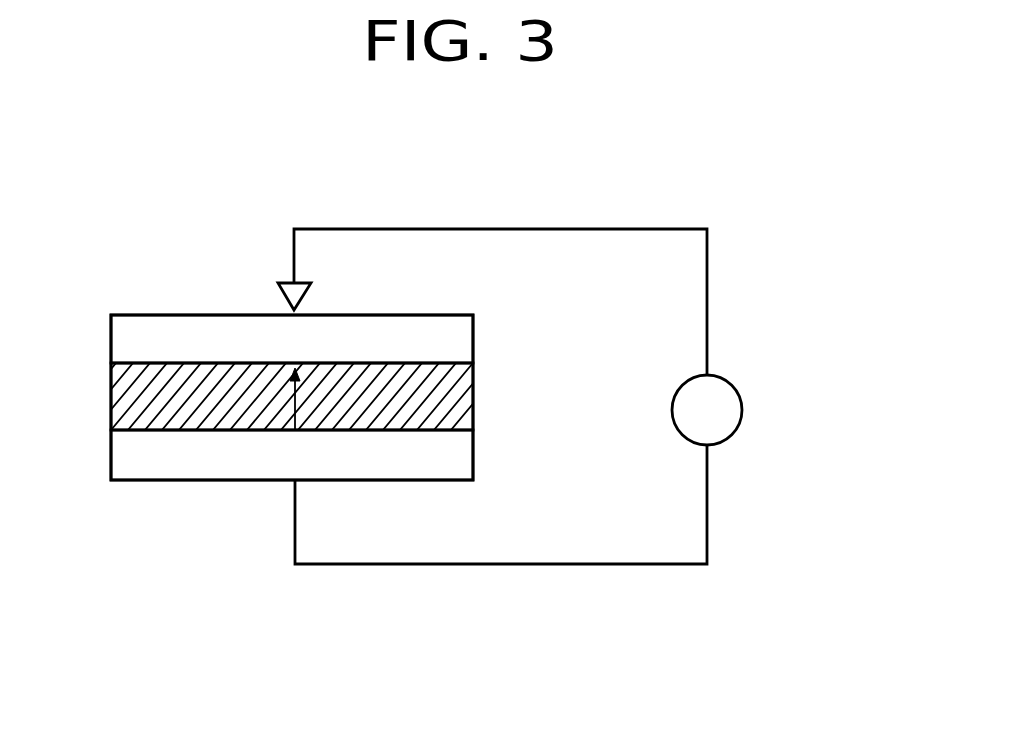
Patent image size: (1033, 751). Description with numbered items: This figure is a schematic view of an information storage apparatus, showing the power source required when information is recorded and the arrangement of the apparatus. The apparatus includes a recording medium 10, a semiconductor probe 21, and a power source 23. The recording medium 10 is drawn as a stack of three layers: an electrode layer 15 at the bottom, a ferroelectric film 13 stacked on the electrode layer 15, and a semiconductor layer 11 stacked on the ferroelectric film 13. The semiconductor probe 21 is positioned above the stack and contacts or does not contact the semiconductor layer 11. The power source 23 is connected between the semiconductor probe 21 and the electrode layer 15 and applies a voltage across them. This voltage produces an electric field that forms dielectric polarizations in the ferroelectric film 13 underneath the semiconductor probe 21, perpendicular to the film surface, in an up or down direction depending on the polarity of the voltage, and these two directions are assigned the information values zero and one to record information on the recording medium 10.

The recording medium 10 is at (167, 505).
The semiconductor layer 11 is at (111, 341).
The ferroelectric film 13 is at (111, 405).
The electrode layer 15 is at (111, 460).
The semiconductor probe 21 is at (284, 283).
The power source 23 is at (729, 381).